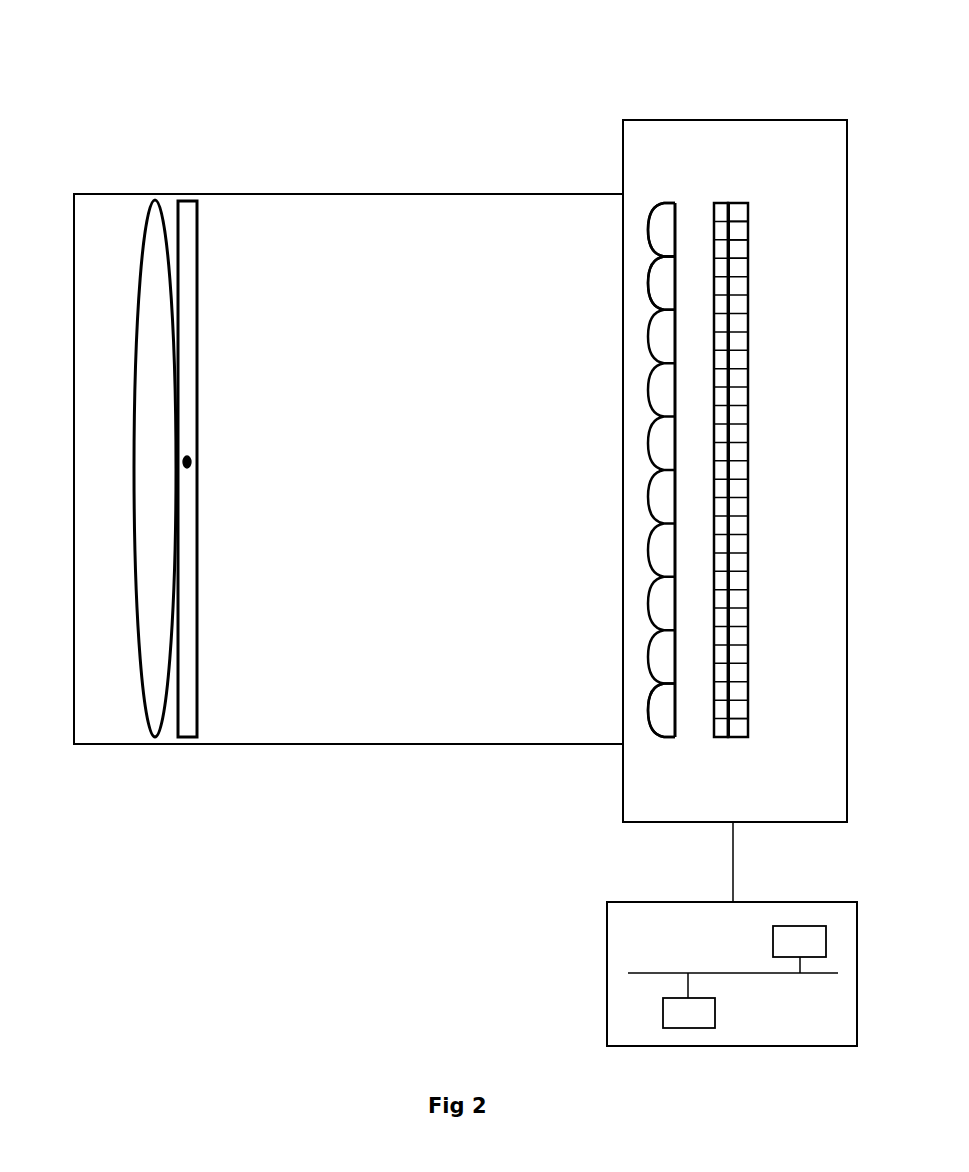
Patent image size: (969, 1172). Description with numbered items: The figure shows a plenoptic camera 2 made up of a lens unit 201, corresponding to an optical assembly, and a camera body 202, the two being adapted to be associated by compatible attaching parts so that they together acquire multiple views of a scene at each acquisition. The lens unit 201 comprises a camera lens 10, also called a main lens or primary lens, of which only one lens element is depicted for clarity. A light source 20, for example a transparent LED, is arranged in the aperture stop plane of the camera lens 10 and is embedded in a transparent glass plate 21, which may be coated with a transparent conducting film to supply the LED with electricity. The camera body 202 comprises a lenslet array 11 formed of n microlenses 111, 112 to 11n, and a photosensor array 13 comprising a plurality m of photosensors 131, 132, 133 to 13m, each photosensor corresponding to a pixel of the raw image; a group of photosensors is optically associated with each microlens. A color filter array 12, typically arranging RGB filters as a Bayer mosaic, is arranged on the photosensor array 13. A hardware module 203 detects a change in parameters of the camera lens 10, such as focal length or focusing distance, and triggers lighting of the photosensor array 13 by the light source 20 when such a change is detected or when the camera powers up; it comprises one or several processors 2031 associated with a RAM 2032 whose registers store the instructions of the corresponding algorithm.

The plenoptic camera 2 is at (230, 147).
The camera lens 10 is at (137, 340).
The lenslet array 11 is at (668, 202).
The microlens 111 is at (650, 235).
The microlens 112 is at (648, 288).
The microlens 11n is at (648, 712).
The color filter array 12 is at (720, 202).
The photosensor array 13 is at (736, 202).
The photosensor 131 is at (748, 210).
The photosensor 132 is at (748, 233).
The photosensor 133 is at (748, 250).
The photosensor 13m is at (750, 730).
The light source 20 is at (193, 458).
The transparent glass plate 21 is at (198, 337).
The lens unit 201 is at (325, 744).
The camera body 202 is at (623, 178).
The hardware module 203 is at (607, 925).
The processor 2031 is at (787, 935).
The RAM 2032 is at (675, 1022).